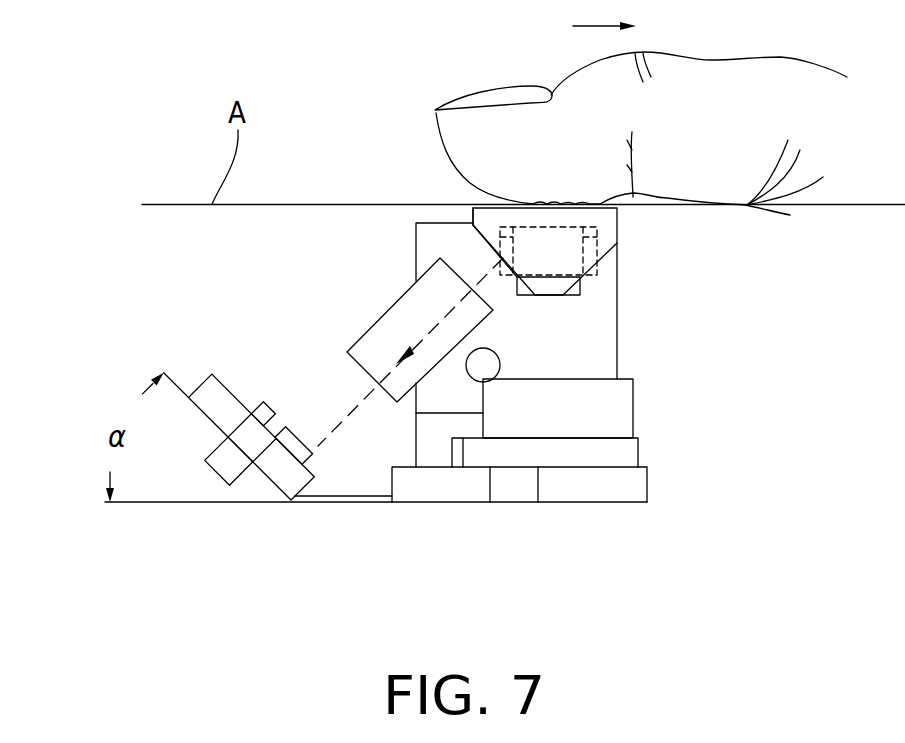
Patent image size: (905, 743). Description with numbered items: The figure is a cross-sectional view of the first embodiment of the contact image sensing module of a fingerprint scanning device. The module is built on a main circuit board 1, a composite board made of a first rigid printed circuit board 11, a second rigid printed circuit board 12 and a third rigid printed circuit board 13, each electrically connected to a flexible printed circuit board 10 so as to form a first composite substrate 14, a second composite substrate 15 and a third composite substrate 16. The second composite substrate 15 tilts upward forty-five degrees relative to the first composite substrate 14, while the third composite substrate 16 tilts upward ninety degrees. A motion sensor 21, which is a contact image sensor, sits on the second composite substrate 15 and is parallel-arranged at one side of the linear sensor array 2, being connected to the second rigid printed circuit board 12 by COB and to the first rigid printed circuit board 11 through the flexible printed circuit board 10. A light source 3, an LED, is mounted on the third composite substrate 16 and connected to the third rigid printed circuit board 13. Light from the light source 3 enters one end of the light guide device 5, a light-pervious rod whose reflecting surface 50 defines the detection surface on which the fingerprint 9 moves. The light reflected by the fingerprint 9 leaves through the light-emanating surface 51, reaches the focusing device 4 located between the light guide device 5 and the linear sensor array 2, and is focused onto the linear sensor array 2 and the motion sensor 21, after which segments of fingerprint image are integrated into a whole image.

The main circuit board 1 is at (732, 415).
The linear sensor array 2 is at (284, 424).
The light source 3 is at (620, 252).
The focusing device 4 is at (373, 342).
The light guide device 5 is at (487, 213).
The fingerprint 9 is at (537, 203).
The flexible printed circuit board 10 is at (437, 452).
The first rigid printed circuit board 11 is at (577, 487).
The second rigid printed circuit board 12 is at (288, 475).
The third rigid printed circuit board 13 is at (592, 338).
The first composite substrate 14 is at (628, 520).
The second composite substrate 15 is at (253, 490).
The third composite substrate 16 is at (640, 296).
The motion sensor 21 is at (264, 410).
The reflecting surface 50 is at (568, 205).
The light-emanating surface 51 is at (473, 237).